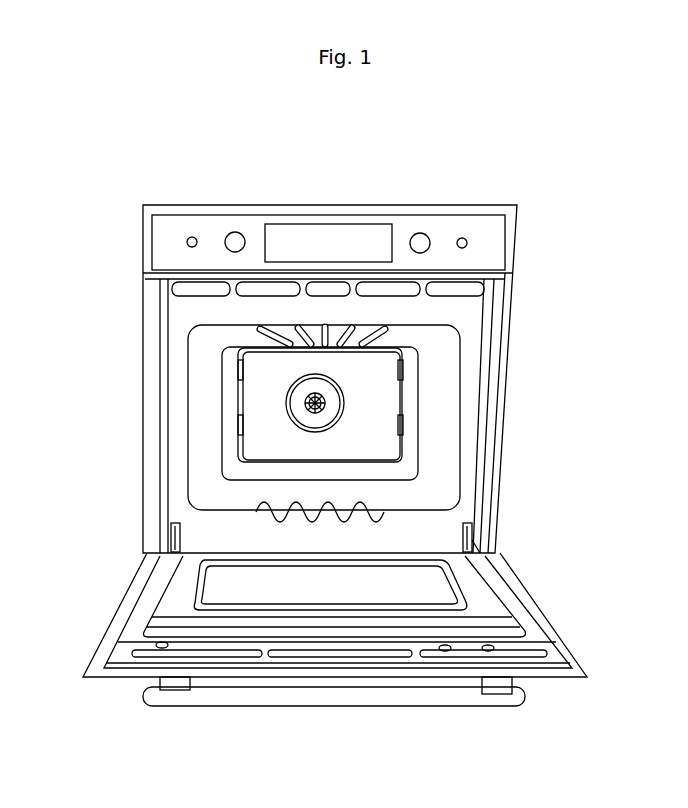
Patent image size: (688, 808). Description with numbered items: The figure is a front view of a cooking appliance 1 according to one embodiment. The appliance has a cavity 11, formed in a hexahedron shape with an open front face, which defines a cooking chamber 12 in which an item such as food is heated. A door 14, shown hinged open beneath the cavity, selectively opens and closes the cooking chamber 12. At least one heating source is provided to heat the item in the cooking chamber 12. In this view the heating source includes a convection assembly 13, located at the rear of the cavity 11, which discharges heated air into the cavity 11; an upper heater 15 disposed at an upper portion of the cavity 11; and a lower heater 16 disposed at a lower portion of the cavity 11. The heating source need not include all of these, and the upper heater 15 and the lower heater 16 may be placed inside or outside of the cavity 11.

The cooking appliance 1 is at (103, 172).
The cavity 11 is at (196, 344).
The cooking chamber 12 is at (222, 334).
The convection assembly 13 is at (272, 405).
The door 14 is at (106, 606).
The upper heater 15 is at (440, 344).
The lower heater 16 is at (345, 512).